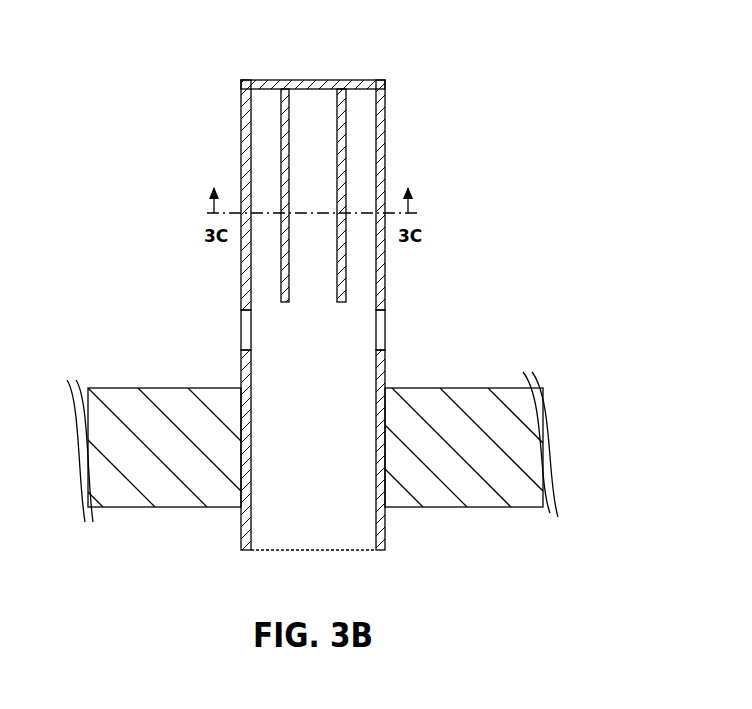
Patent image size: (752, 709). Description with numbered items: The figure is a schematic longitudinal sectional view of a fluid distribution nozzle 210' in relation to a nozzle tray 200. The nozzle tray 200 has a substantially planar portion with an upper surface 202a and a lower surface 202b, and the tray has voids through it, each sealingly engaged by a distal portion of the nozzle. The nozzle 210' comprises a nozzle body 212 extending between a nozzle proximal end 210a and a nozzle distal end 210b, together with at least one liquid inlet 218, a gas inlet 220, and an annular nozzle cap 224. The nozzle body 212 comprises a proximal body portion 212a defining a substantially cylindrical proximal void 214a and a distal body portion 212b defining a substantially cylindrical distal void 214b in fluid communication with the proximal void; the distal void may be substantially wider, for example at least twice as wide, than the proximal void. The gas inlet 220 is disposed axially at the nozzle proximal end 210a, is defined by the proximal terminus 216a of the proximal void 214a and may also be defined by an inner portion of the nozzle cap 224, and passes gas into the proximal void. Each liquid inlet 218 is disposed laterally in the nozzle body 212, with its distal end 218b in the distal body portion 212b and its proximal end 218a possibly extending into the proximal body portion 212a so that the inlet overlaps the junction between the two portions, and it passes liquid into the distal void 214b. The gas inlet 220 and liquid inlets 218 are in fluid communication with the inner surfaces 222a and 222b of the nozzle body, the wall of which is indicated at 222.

The nozzle tray 200 is at (303, 446).
The planar portion upper surface 202a is at (127, 388).
The planar portion lower surface 202b is at (483, 509).
The fluid distribution nozzle 210' is at (419, 297).
The nozzle proximal end 210a is at (279, 59).
The nozzle distal end 210b is at (302, 468).
The nozzle body 212 is at (427, 313).
The proximal body portion 212a is at (386, 148).
The distal body portion 212b is at (427, 330).
The proximal void 214a is at (313, 195).
The distal void 214b is at (313, 450).
The proximal terminus 216a is at (327, 163).
The liquid inlet 218 is at (324, 312).
The proximal end of liquid inlet 218a is at (240, 310).
The distal end of liquid inlet 218b is at (386, 353).
The gas inlet 220 is at (316, 77).
The inner wall surface 222 is at (253, 420).
The inner surface 222a is at (297, 103).
The inner surface 222b is at (365, 532).
The annular nozzle cap 224 is at (363, 73).